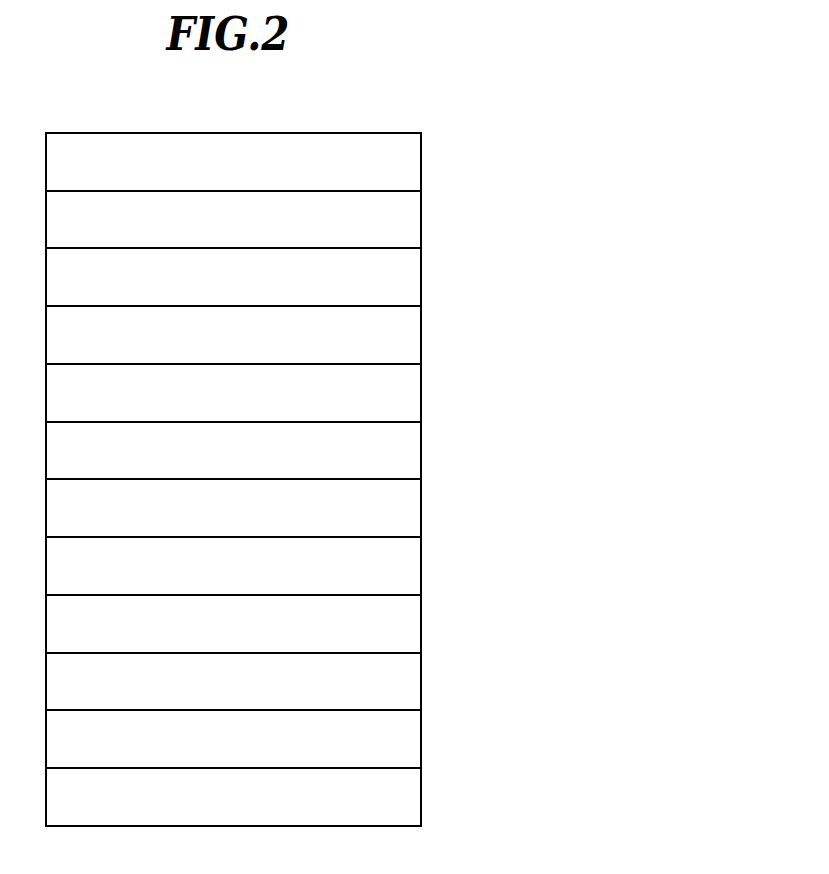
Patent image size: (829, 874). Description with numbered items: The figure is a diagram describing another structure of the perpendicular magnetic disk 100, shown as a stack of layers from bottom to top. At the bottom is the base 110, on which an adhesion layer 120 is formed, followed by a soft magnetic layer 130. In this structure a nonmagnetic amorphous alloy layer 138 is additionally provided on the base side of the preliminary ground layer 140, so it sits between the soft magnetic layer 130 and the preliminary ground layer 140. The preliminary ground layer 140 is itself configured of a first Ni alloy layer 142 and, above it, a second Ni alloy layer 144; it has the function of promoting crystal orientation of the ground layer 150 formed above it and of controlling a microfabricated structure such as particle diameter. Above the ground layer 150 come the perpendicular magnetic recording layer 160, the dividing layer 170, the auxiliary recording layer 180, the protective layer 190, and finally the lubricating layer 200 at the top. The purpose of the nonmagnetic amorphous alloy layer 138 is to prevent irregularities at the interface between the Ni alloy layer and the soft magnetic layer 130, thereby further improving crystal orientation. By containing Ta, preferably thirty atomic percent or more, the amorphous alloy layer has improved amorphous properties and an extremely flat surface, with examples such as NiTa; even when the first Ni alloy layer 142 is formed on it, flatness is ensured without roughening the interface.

The perpendicular magnetic disk 100 is at (395, 120).
The lubricating layer 200 is at (409, 160).
The protective layer 190 is at (408, 212).
The auxiliary recording layer 180 is at (408, 270).
The dividing layer 170 is at (407, 333).
The perpendicular magnetic recording layer 160 is at (407, 391).
The ground layer 150 is at (407, 450).
The second Ni alloy layer 144 is at (407, 508).
The first Ni alloy layer 142 is at (407, 568).
The preliminary ground layer 140 is at (392, 536).
The nonmagnetic amorphous alloy layer 138 is at (407, 624).
The soft magnetic layer 130 is at (407, 684).
The adhesion layer 120 is at (407, 741).
The base 110 is at (407, 801).